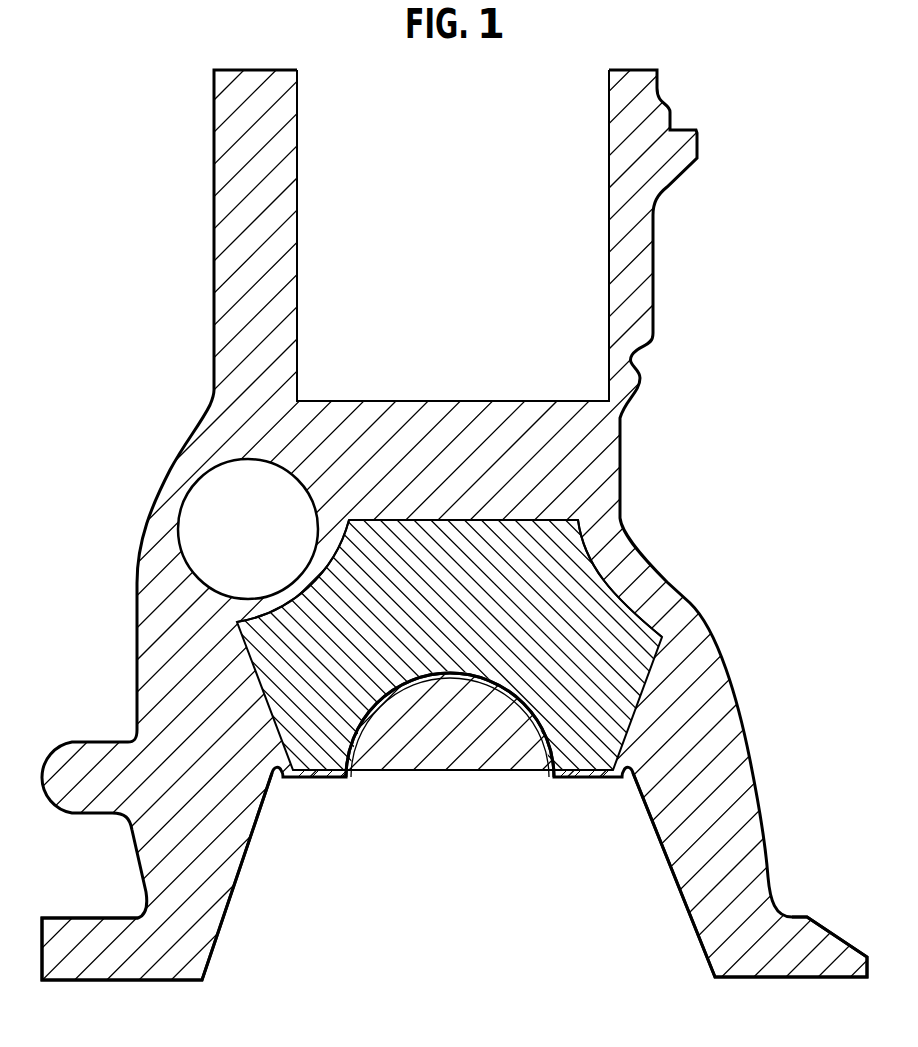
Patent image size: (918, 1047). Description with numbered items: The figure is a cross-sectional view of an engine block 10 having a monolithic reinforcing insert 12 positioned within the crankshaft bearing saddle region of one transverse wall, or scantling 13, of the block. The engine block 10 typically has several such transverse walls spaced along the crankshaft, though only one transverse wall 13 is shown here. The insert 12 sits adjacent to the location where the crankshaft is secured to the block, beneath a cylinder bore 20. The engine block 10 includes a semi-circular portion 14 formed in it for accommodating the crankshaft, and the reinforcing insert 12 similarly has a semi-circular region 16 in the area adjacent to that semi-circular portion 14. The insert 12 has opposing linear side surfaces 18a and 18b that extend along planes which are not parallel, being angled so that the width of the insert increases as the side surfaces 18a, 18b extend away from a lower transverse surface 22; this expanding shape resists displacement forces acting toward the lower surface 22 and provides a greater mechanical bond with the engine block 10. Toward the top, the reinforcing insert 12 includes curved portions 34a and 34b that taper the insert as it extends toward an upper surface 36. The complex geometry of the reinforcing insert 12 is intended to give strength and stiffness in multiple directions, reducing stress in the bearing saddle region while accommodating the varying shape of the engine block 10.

The engine block 10 is at (248, 142).
The reinforcing insert 12 is at (577, 522).
The transverse wall 13 is at (495, 473).
The semi-circular portion 14 is at (534, 725).
The semi-circular region 16 is at (473, 672).
The linear side surface 18a is at (253, 668).
The linear side surface 18b is at (647, 695).
The cylinder bore 20 is at (426, 209).
The lower transverse surface 22 is at (317, 775).
The curved portion 34a is at (296, 612).
The curved portion 34b is at (633, 597).
The upper surface 36 is at (550, 521).